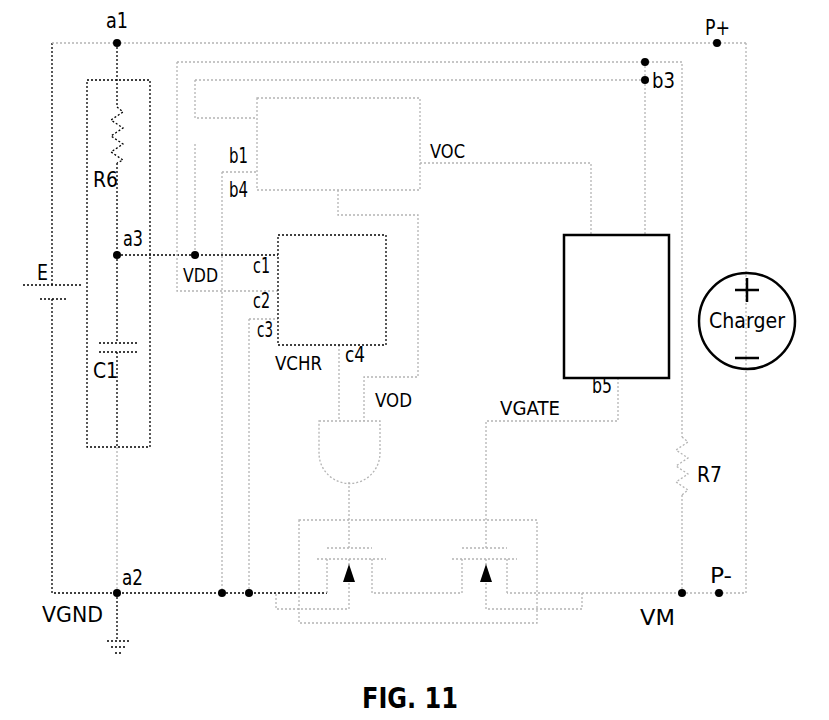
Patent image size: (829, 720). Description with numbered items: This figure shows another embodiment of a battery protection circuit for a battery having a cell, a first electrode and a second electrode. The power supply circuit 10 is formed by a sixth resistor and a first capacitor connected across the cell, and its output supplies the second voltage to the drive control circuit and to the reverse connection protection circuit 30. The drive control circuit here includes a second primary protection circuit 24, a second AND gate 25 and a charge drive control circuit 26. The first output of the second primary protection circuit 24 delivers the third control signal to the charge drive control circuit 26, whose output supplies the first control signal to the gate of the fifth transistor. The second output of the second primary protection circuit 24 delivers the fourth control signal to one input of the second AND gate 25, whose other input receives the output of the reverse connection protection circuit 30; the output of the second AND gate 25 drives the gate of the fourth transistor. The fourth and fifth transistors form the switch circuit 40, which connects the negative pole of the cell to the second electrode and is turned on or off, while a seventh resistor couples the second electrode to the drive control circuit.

The power supply circuit 10 is at (102, 79).
The second primary protection circuit 24 is at (420, 110).
The reverse connection protection circuit 30 is at (300, 233).
The second AND gate 25 is at (318, 447).
The charge drive control circuit 26 is at (562, 232).
The switch circuit 40 is at (322, 519).